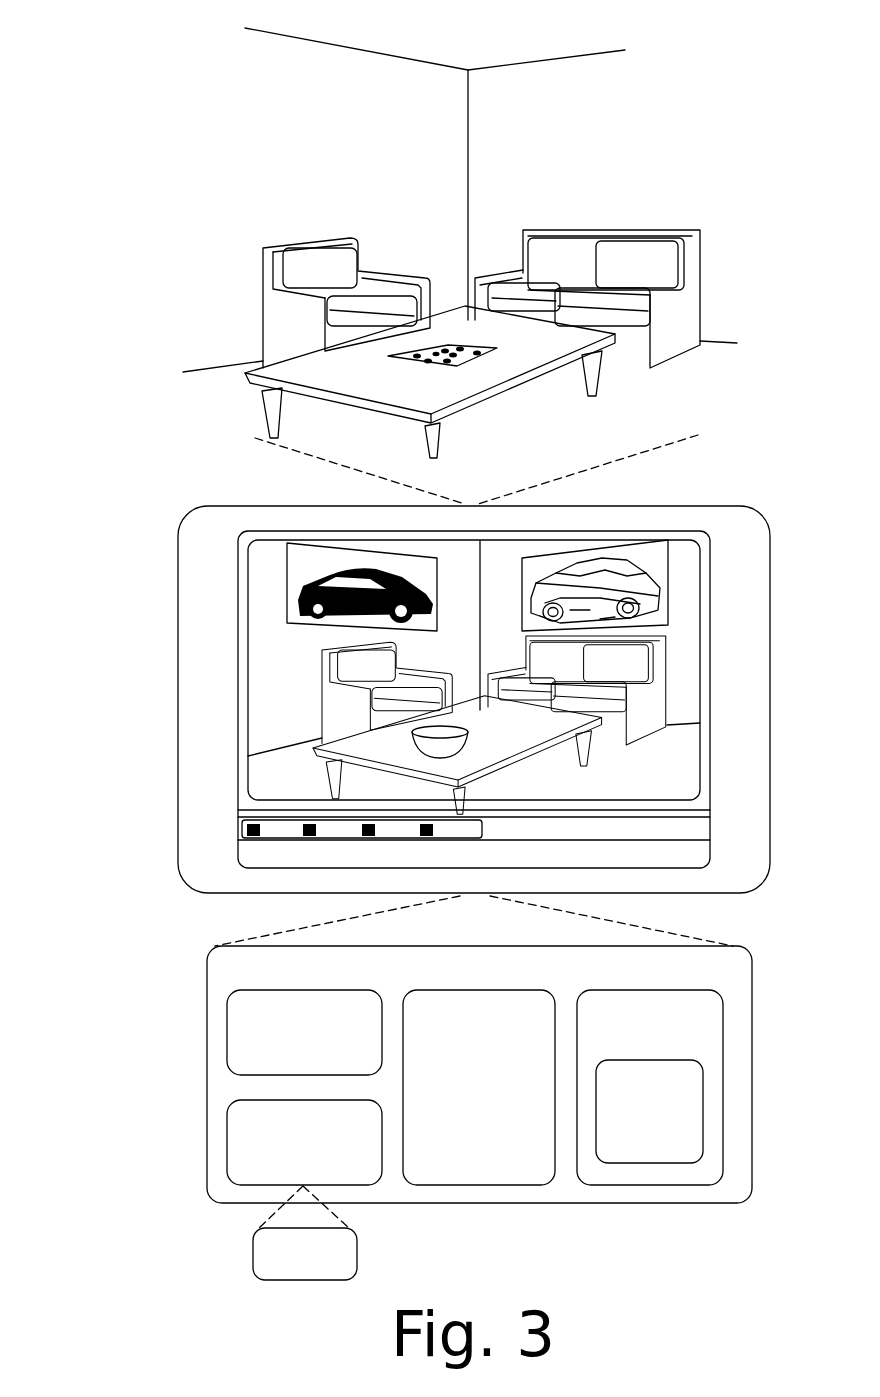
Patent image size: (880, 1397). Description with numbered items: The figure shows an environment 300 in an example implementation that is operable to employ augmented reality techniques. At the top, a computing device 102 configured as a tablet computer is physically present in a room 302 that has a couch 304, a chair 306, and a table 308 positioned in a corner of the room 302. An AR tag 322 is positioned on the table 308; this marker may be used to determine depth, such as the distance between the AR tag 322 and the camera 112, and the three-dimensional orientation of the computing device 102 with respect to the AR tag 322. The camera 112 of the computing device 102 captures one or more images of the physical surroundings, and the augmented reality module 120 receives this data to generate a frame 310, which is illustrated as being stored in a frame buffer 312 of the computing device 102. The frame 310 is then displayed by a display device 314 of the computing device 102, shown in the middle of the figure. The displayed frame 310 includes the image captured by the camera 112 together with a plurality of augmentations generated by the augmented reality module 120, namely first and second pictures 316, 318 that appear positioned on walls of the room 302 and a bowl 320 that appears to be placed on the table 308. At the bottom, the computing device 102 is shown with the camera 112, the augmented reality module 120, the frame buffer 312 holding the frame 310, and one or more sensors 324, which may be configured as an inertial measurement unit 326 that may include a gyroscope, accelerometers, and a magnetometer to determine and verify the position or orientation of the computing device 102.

The environment 300 is at (176, 62).
The room 302 is at (680, 134).
The couch 304 is at (700, 232).
The chair 306 is at (348, 240).
The table 308 is at (390, 418).
The frame 310 is at (668, 1137).
The frame buffer 312 is at (702, 1051).
The display device 314 is at (688, 794).
The first picture 316 is at (325, 545).
The second picture 318 is at (632, 545).
The bowl 320 is at (490, 742).
The AR tag 322 is at (497, 352).
The sensors 324 is at (367, 1156).
The inertial measurement unit 326 is at (347, 1266).
The computing device 102 is at (593, 982).
The camera 112 is at (367, 1046).
The augmented reality module 120 is at (496, 1137).